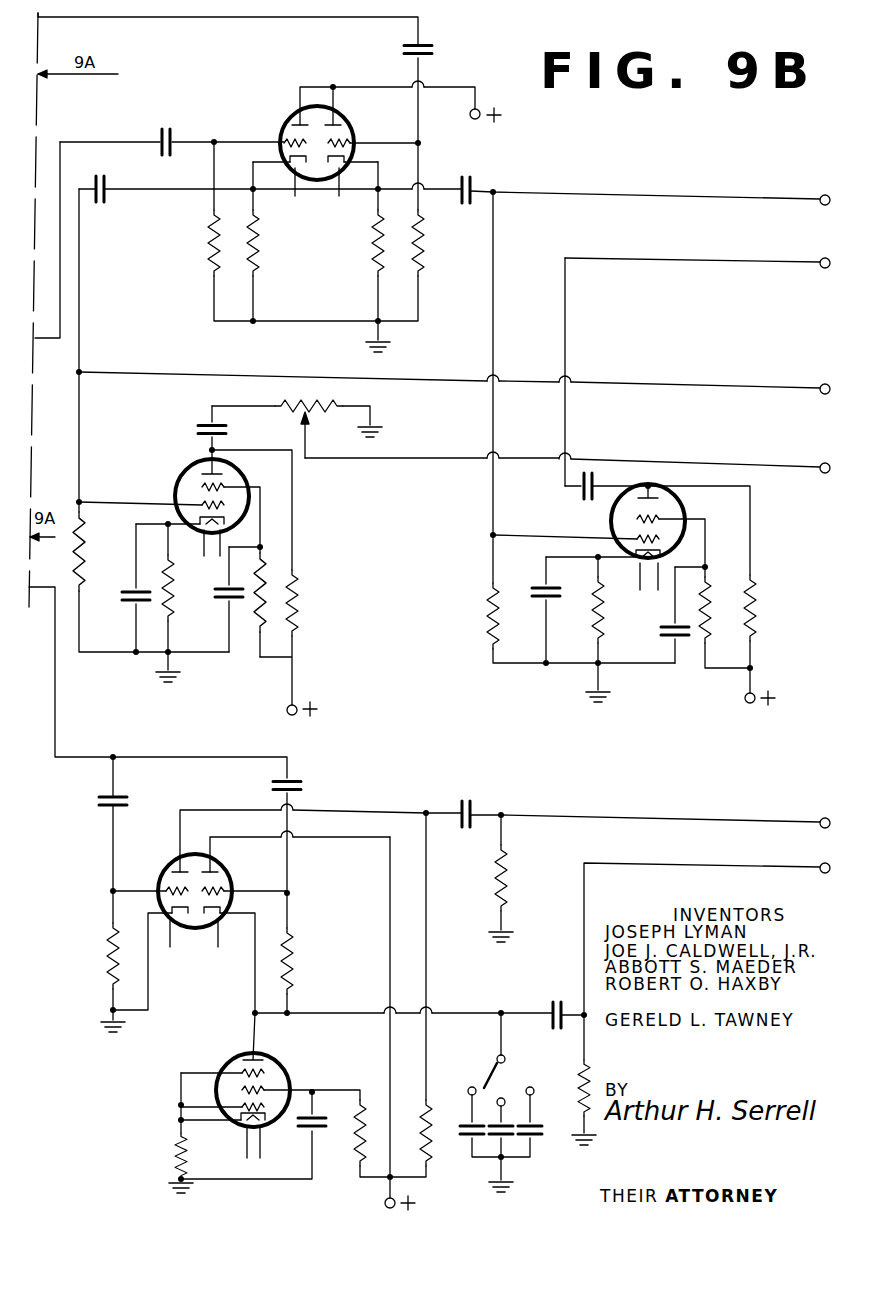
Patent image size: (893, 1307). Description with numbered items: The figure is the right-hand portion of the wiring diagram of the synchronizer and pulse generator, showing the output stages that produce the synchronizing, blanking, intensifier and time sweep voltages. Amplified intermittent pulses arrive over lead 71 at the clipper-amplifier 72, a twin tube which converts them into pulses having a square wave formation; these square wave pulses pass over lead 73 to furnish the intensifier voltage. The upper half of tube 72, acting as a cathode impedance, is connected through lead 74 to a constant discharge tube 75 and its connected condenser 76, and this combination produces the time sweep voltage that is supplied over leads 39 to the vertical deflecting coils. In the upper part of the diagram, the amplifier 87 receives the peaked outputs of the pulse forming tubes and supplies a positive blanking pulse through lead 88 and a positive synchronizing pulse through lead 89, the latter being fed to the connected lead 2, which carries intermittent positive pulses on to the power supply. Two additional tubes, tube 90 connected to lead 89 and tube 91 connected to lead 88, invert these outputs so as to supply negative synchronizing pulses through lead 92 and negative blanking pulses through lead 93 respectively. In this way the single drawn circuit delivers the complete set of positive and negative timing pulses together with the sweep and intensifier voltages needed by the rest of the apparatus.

The lead 2 is at (496, 293).
The leads 39 is at (617, 868).
The lead 71 is at (57, 700).
The clipper-amplifier 72 is at (167, 866).
The lead 73 is at (541, 813).
The lead 74 is at (388, 855).
The constant discharge tube 75 is at (288, 1065).
The condenser 76 is at (535, 1116).
The amplifier 87 is at (318, 248).
The lead 88 is at (668, 388).
The lead 89 is at (650, 200).
The tube 90 is at (610, 523).
The tube 91 is at (188, 466).
The lead 92 is at (665, 262).
The lead 93 is at (760, 470).